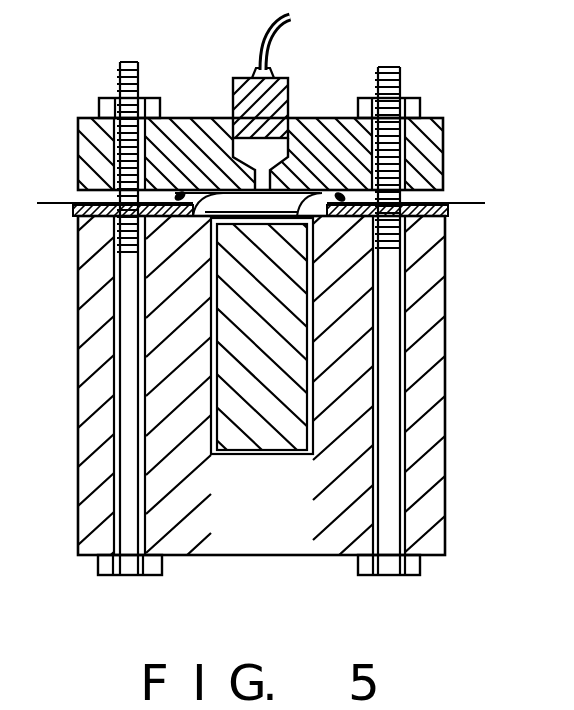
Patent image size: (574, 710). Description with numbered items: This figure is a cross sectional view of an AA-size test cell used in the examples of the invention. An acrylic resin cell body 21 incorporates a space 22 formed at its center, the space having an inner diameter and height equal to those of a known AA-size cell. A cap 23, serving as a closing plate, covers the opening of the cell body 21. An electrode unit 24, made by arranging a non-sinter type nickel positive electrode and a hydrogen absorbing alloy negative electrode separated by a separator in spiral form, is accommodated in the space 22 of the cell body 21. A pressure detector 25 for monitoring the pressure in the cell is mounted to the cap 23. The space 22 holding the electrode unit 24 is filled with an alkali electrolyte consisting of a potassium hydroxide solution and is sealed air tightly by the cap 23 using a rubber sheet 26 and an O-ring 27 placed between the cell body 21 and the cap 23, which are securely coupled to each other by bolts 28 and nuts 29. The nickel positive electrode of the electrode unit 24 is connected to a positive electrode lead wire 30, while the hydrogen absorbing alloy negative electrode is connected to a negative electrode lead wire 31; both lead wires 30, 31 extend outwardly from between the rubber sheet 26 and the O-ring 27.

The cell body 21 is at (430, 500).
The space 22 is at (306, 380).
The cap 23 is at (443, 158).
The electrode unit 24 is at (273, 445).
The pressure detector 25 is at (290, 97).
The rubber sheet 26 is at (448, 218).
The O-ring 27 is at (181, 196).
The bolts 28 is at (130, 577).
The nuts 29 is at (100, 98).
The positive electrode lead wire 30 is at (483, 203).
The negative electrode lead wire 31 is at (40, 197).